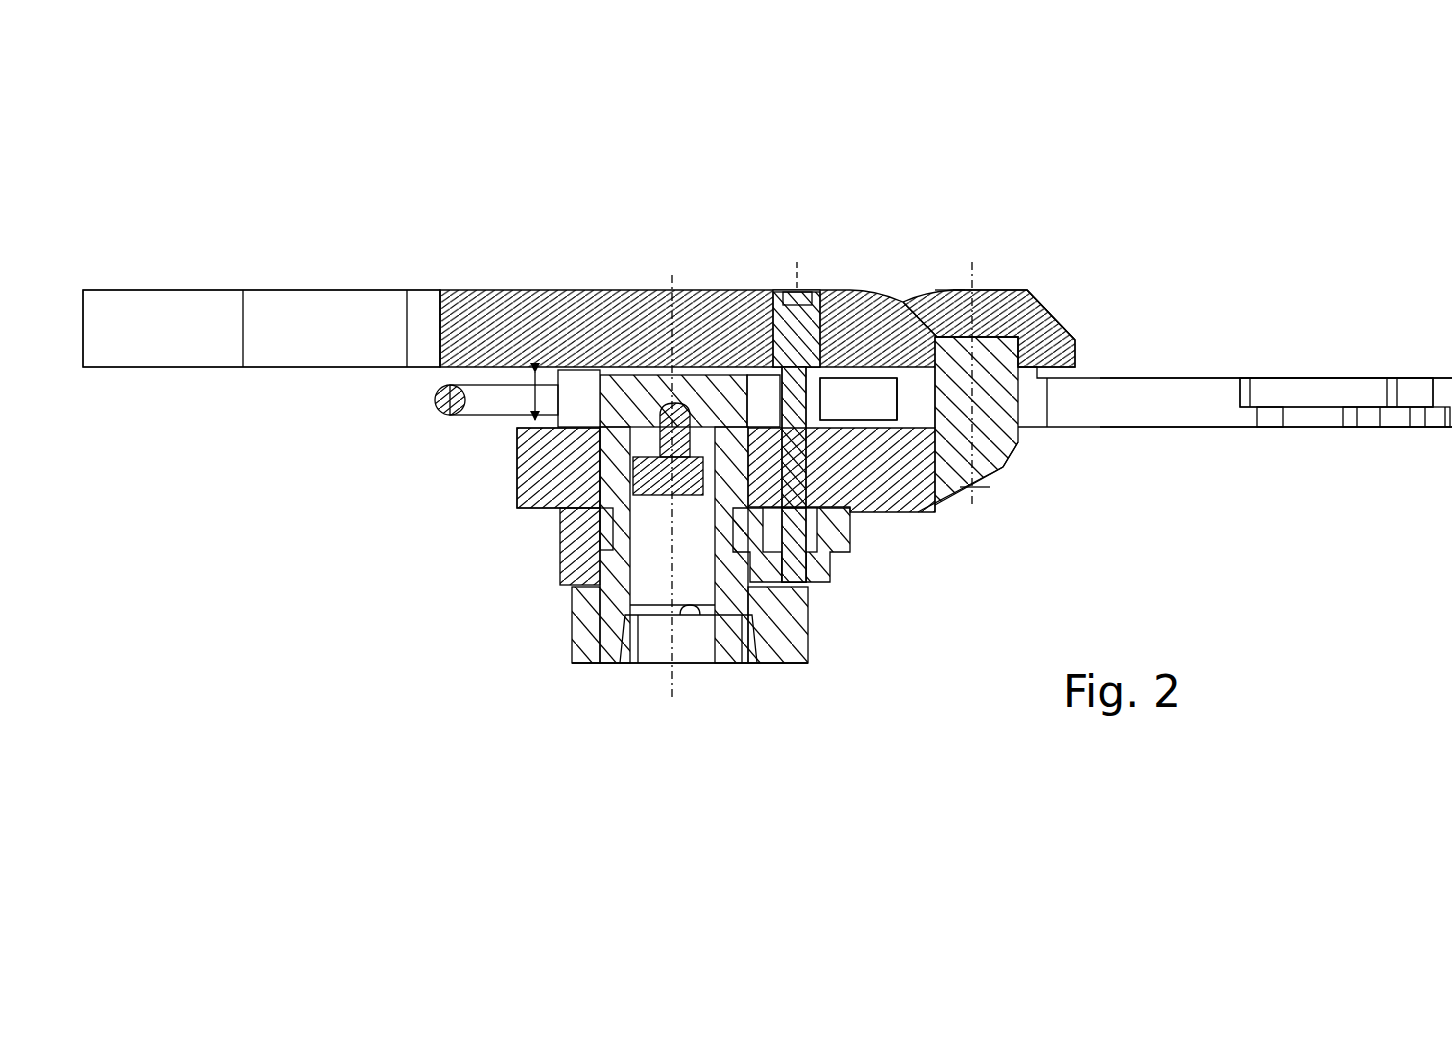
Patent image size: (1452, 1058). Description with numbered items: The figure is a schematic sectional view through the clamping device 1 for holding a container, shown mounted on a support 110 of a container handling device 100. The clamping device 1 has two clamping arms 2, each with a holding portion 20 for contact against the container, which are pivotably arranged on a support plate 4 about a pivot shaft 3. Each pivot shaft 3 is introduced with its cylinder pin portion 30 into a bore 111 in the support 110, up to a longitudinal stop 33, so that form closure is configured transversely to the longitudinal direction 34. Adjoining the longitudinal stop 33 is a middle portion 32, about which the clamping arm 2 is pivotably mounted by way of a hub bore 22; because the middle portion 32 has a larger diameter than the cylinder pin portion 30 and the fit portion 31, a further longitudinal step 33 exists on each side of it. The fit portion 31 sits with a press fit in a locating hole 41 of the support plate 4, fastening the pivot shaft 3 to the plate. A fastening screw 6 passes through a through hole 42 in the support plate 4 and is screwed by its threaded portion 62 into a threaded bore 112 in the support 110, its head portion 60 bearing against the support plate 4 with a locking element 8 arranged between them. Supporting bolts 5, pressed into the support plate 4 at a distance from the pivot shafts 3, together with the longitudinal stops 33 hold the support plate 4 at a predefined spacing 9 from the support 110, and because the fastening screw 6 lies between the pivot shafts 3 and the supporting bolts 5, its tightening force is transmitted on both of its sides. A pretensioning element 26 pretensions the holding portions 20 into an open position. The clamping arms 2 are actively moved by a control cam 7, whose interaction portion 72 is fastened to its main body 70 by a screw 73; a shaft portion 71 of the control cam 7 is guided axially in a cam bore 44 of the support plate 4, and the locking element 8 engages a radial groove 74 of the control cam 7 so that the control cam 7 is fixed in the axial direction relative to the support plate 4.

The container handling device 100 is at (195, 152).
The support 110 is at (305, 308).
The cylinder pin portion 30 is at (903, 290).
The pivot shaft 3 is at (1003, 312).
The bore 111 is at (952, 290).
The longitudinal stop 33 is at (1050, 318).
The fit portion 31 is at (1005, 458).
The fastening screw 6 is at (815, 290).
The threaded bore 112 is at (785, 330).
The through hole 42 is at (835, 375).
The threaded portion 62 is at (757, 392).
The hub bore 22 is at (1040, 392).
The holding portion 20 is at (1327, 420).
The clamping arm 2 is at (1228, 462).
The interaction portion 72 is at (617, 393).
The spacing 9 is at (533, 400).
The pretensioning element 26 is at (448, 402).
The supporting bolt 5 is at (670, 395).
The cam bore 44 is at (525, 452).
The support plate 4 is at (530, 486).
The shaft portion 71 is at (600, 490).
The screw 73 is at (605, 540).
The radial groove 74 is at (663, 490).
The control cam 7 is at (570, 683).
The main body 70 is at (785, 645).
The locking element 8 is at (730, 610).
The head portion 60 is at (842, 560).
The middle portion 32 is at (913, 462).
The locating hole 41 is at (948, 485).
The longitudinal direction 34 is at (973, 492).
The clamping device 1 is at (630, 770).